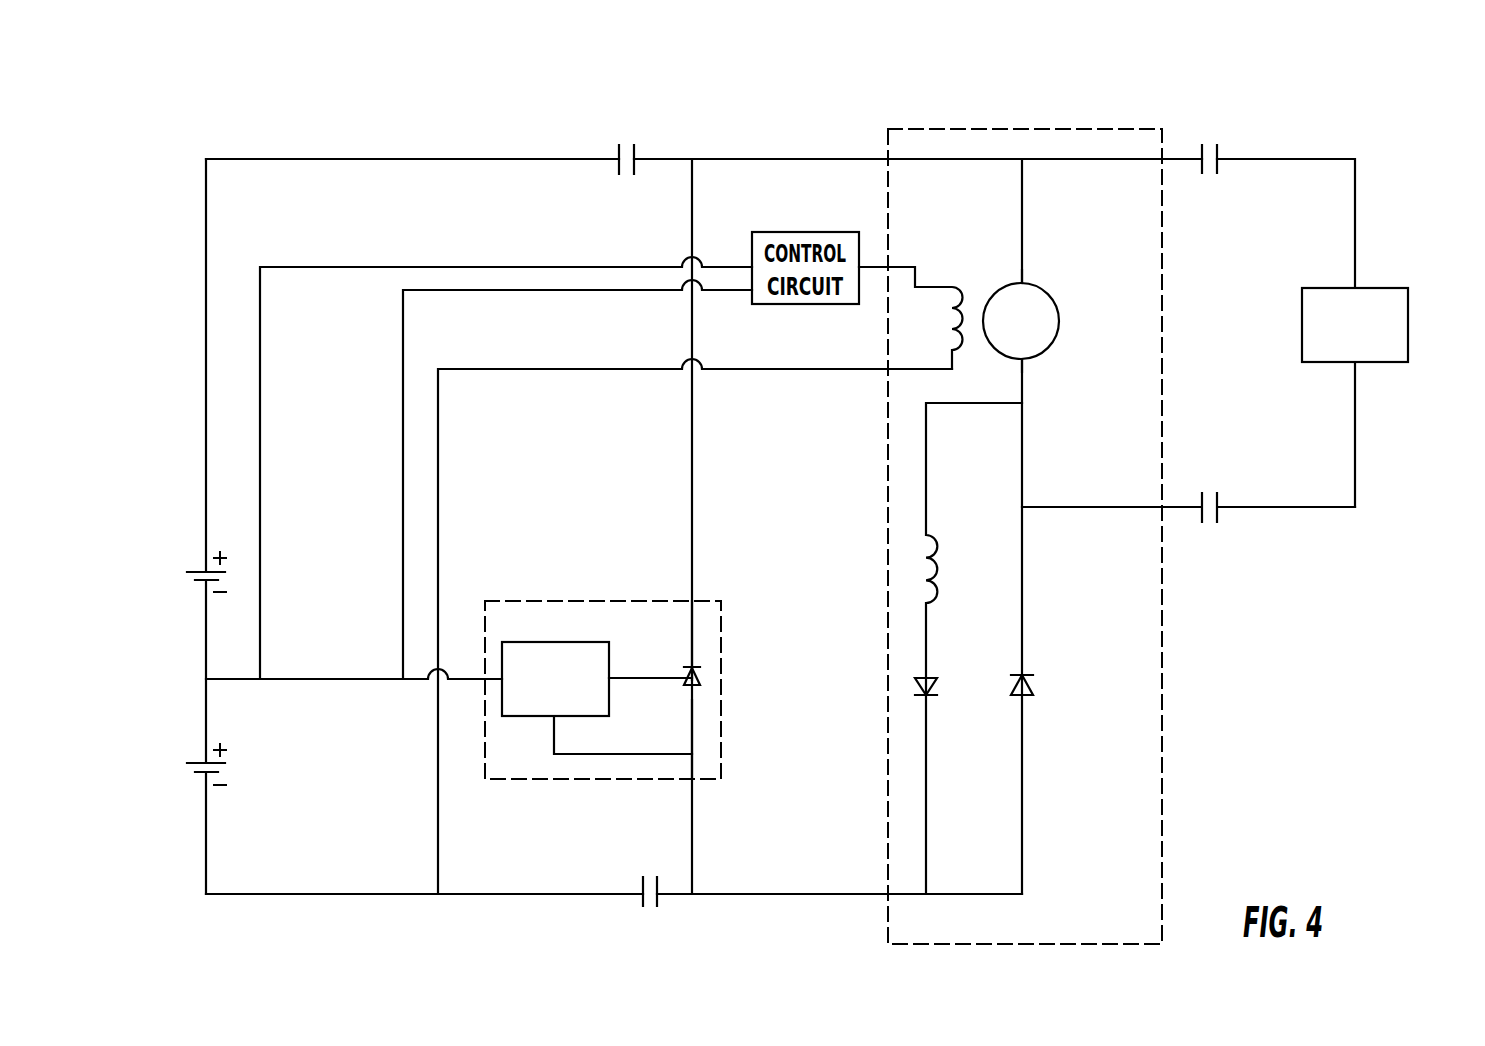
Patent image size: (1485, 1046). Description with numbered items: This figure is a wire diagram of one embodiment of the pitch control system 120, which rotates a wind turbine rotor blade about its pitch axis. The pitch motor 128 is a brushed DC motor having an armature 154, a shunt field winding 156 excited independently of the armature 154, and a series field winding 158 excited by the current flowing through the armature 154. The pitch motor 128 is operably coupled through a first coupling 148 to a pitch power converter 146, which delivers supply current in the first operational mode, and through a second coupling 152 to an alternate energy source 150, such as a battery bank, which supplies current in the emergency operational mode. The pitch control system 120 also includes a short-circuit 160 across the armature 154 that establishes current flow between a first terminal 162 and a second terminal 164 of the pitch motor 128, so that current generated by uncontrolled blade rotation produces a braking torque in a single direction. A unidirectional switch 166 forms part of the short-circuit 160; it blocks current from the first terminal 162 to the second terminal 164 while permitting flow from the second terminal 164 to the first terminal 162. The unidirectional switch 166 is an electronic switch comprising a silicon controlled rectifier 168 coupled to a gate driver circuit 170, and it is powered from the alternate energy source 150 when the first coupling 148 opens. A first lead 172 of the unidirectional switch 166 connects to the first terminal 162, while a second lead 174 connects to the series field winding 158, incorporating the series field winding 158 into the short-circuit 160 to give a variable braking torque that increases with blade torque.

The pitch control system 120 is at (1383, 102).
The pitch motor 128 is at (1105, 145).
The pitch power converter 146 is at (1392, 317).
The first coupling 148 is at (1218, 148).
The alternate energy source 150 is at (206, 580).
The second coupling 152 is at (623, 142).
The armature 154 is at (1033, 320).
The shunt field winding 156 is at (957, 268).
The series field winding 158 is at (950, 536).
The short-circuit 160 is at (693, 220).
The first terminal 162 is at (1022, 283).
The second terminal 164 is at (1022, 362).
The unidirectional switch 166 is at (601, 600).
The silicon controlled rectifier 168 is at (698, 678).
The gate driver circuit 170 is at (609, 666).
The first lead 172 is at (701, 590).
The second lead 174 is at (681, 789).